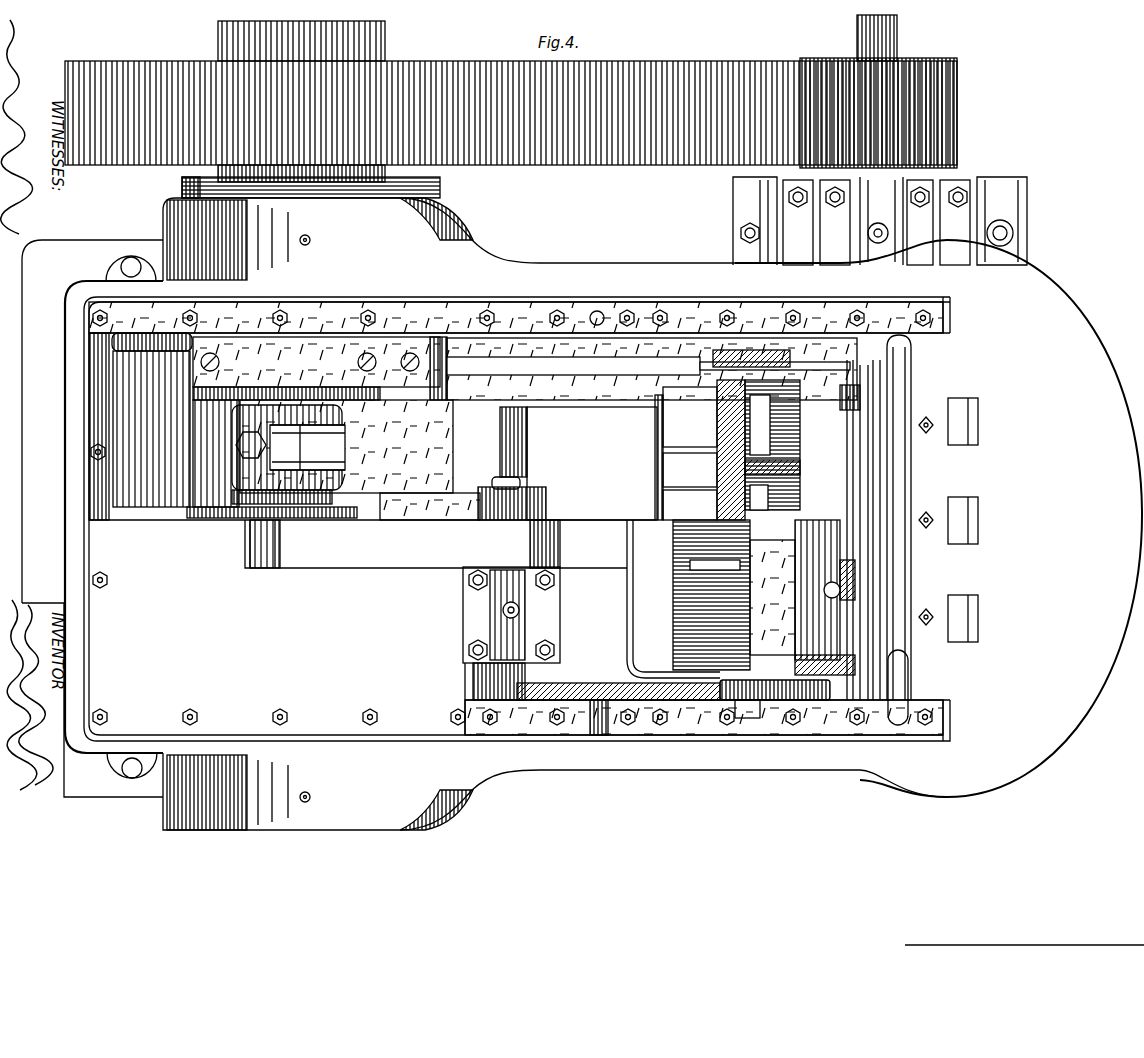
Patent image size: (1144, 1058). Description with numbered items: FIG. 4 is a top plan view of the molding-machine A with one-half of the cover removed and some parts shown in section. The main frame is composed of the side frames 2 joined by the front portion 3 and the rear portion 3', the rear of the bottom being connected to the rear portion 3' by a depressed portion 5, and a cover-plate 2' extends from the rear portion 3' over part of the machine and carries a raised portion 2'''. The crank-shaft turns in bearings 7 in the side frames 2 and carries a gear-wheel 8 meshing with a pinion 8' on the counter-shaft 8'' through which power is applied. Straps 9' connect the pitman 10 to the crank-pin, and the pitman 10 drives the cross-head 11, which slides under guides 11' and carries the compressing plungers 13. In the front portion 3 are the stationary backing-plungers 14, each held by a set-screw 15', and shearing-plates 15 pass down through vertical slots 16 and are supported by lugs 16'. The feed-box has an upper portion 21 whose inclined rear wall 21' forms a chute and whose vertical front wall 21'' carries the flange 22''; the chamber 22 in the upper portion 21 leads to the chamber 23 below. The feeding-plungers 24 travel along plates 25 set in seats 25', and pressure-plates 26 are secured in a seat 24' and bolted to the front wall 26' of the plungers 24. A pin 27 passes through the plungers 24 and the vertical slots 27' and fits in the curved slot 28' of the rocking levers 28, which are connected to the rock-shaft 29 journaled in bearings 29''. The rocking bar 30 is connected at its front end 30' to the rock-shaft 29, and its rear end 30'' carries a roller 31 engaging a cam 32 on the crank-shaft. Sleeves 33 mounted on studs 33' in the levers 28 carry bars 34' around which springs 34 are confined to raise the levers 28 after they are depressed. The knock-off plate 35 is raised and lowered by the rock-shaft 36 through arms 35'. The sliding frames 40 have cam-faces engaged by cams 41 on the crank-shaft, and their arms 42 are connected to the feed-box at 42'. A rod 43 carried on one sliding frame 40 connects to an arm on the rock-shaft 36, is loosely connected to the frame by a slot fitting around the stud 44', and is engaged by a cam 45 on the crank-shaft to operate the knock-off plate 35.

The gear-wheel 8 is at (511, 101).
The pinion 8' is at (890, 113).
The counter-shaft 8'' is at (862, 38).
The bearings 7 is at (163, 210).
The machine A is at (574, 499).
The side frames 2 is at (582, 518).
The cover-plate 2' is at (246, 647).
The raised portion 2''' is at (405, 544).
The guides 11' is at (516, 518).
The rear portion 3' is at (98, 426).
The depressed portion 5 is at (185, 452).
The cam 32 is at (187, 512).
The sliding frames 40 is at (316, 362).
The cams 41 is at (387, 376).
The cam 45 is at (240, 396).
The bolt or stud 44' is at (435, 381).
The pitman 10 is at (346, 446).
The straps 9' is at (272, 447).
The rear end of rocking bar 30'' is at (285, 487).
The roller 31 is at (282, 520).
The rocking bar 30 is at (430, 507).
The rock-shaft 29 is at (528, 448).
The front end of rocking bar 30' is at (528, 503).
The cross-head 11 is at (592, 463).
The arms 42 is at (652, 420).
The rod 43 is at (648, 367).
The connection of arms to feed-box 42' is at (751, 344).
The rear wall of upper portion 21' is at (690, 417).
The reciprocating or compressing plungers 13 is at (690, 473).
The upper portion of feed-box 21 is at (704, 467).
The chamber 22 is at (688, 529).
The seat 24' is at (788, 445).
The front wall of feeding-plungers 26' is at (788, 460).
The seats 25' is at (836, 409).
The pressure-plates 26 is at (807, 490).
The flange 22'' is at (825, 508).
The rock-shaft 36 is at (860, 474).
The stationary backing-plungers 14 is at (868, 505).
The set-screw 15' is at (925, 433).
The lugs 16' is at (979, 421).
The vertical slots 16 is at (948, 529).
The shearing-plates 15 is at (948, 623).
The front portion 3 is at (1077, 473).
The bearings 29'' is at (498, 615).
The vertical slots 27' is at (480, 681).
The rocking levers 28 is at (618, 679).
The sleeves 33 is at (586, 715).
The studs 33' is at (583, 741).
The feeding-plungers 24 is at (772, 592).
The front wall of upper portion 21'' is at (819, 538).
The plates 25 is at (817, 590).
The knock-off plate 35 is at (858, 579).
The bars 34' is at (804, 588).
The springs 34 is at (824, 612).
The chamber 23 is at (795, 636).
The arms 35' is at (825, 663).
The curved slot 28' is at (786, 691).
The pin 27 is at (750, 716).